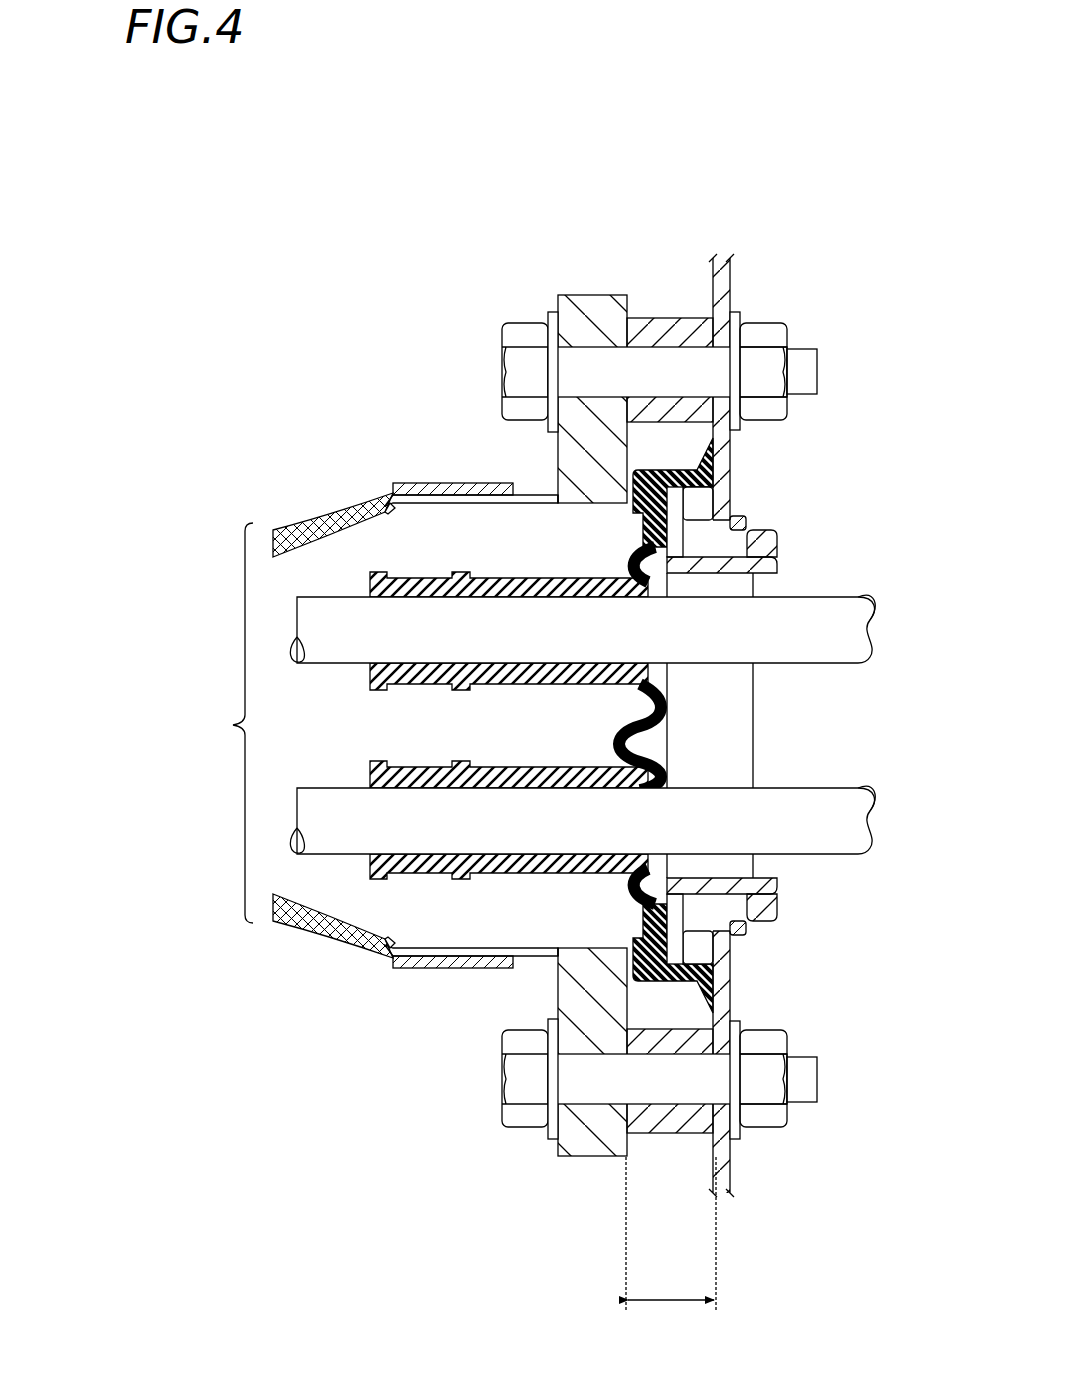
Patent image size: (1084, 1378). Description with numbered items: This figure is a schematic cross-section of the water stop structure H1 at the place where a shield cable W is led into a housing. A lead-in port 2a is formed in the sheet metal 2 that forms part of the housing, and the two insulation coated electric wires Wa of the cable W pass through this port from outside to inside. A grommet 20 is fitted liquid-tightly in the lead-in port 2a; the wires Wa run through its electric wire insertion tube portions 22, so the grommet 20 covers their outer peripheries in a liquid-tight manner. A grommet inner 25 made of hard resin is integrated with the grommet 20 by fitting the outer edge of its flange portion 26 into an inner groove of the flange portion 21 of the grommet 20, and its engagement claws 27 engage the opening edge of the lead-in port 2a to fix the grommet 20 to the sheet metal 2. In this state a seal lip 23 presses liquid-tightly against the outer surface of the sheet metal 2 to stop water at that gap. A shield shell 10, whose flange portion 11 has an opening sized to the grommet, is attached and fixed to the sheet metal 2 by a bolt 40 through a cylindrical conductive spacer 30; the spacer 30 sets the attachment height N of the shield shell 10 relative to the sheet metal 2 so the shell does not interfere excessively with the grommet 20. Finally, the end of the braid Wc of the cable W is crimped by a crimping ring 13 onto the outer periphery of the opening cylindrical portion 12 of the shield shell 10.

The wire harness holder H1 is at (526, 283).
The sheet metal 2 is at (722, 284).
The lead-in port 2a is at (748, 524).
The shield shell 10 is at (596, 1160).
The flange portion 11 is at (576, 1145).
The opening cylindrical portion 12 is at (421, 946).
The crimping ring 13 is at (440, 968).
The grommet 20 is at (522, 875).
The flange portion 21 is at (640, 465).
The electric wire insertion tube portions 22 is at (400, 573).
The seal lip 23 is at (703, 465).
The grommet inner 25 is at (762, 575).
The flange portion 26 is at (648, 518).
The engagement claws 27 is at (780, 545).
The conductive spacer 30 is at (657, 325).
The bolt 40 is at (520, 369).
The shield cable W is at (228, 723).
The insulation coated electric wires Wa is at (818, 665).
The braid Wc is at (303, 933).
The attachment height N is at (671, 1233).